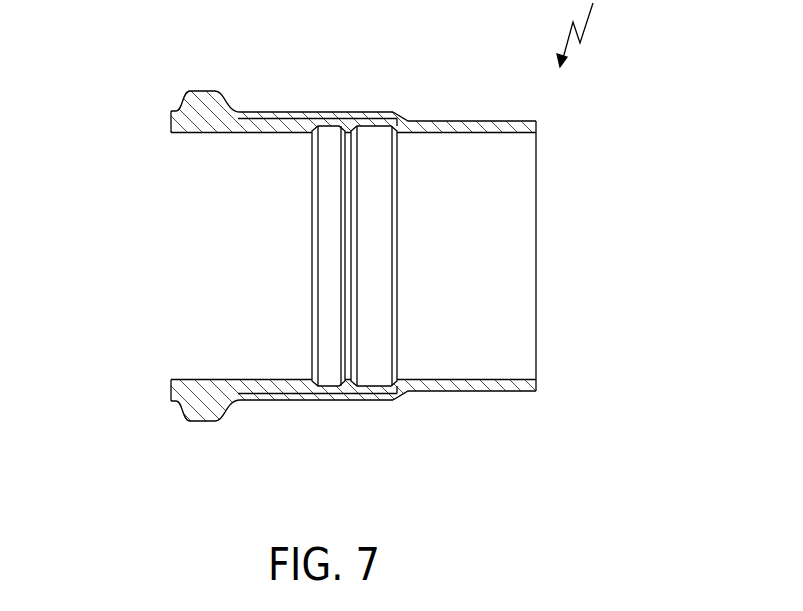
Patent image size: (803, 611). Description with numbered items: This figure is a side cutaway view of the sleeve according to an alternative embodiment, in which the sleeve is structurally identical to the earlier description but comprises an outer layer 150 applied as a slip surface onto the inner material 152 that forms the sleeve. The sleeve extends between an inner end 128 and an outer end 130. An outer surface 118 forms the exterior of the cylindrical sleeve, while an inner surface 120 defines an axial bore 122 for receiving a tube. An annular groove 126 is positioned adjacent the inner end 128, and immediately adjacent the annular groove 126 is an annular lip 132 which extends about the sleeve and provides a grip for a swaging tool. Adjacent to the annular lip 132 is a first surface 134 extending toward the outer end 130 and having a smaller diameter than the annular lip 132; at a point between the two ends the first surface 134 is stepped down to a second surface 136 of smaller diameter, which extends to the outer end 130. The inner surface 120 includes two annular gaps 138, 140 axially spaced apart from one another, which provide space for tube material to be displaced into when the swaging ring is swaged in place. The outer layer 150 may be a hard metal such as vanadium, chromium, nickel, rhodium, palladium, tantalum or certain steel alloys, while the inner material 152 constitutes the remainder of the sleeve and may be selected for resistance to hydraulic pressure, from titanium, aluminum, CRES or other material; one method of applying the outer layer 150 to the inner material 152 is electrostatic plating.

The outer surface 118 is at (372, 98).
The inner surface 120 is at (207, 134).
The axial bore 122 is at (507, 183).
The annular groove 126 is at (171, 109).
The inner end 128 is at (158, 257).
The outer end 130 is at (537, 323).
The annular lip 132 is at (200, 89).
The first surface 134 is at (262, 112).
The second surface 136 is at (477, 121).
The annular gap 138 is at (330, 387).
The annular gap 140 is at (378, 388).
The outer layer 150 is at (318, 111).
The inner material 152 is at (274, 128).